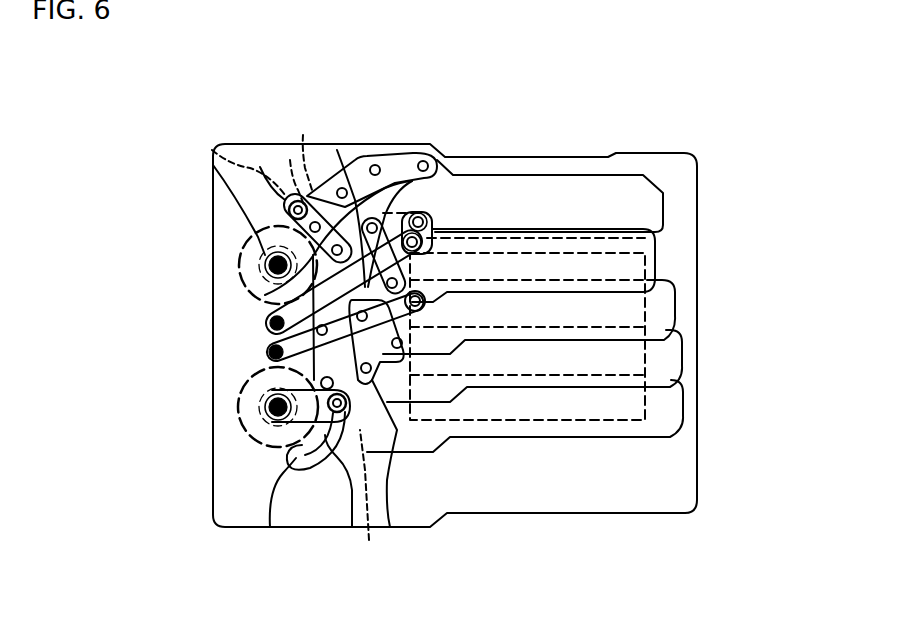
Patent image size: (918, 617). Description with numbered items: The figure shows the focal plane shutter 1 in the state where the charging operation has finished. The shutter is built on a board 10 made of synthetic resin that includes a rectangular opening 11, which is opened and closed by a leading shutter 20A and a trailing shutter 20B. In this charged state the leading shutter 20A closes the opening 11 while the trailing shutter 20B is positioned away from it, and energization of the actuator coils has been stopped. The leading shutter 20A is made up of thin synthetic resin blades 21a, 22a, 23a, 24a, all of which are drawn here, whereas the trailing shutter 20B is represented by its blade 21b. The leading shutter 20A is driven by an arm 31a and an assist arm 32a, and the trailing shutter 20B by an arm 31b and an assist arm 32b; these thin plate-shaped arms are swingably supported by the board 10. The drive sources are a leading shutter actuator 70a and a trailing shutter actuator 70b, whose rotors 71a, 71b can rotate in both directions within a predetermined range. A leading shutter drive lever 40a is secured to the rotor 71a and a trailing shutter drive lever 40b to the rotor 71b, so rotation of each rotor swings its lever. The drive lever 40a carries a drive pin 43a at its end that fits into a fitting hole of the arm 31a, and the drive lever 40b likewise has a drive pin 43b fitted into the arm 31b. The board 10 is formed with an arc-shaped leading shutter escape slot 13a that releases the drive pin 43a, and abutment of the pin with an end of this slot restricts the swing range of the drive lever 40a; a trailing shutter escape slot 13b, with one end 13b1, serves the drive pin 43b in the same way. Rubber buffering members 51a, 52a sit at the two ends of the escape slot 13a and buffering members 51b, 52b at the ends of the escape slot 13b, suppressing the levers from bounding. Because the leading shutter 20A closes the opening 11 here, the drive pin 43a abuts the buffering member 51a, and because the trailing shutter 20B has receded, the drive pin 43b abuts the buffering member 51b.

The focal plane shutter 1 is at (748, 118).
The board 10 is at (704, 174).
The opening 11 is at (608, 412).
The leading shutter 20A is at (614, 405).
The trailing shutter 20B is at (524, 159).
The blade 21a is at (650, 256).
The blade 22a is at (674, 305).
The blade 23a is at (681, 360).
The blade 24a is at (578, 416).
The blade 21b is at (560, 205).
The leading shutter escape slot 13a is at (352, 527).
The trailing shutter escape slot 13b is at (303, 135).
The one end of the escape slot 13b1 is at (212, 150).
The arm 31a is at (390, 527).
The arm 31b is at (398, 167).
The assist arm 32a is at (270, 350).
The assist arm 32b is at (270, 322).
The leading shutter drive lever 40a is at (267, 420).
The trailing shutter drive lever 40b is at (213, 165).
The drive pin 43a is at (285, 449).
The drive pin 43b is at (260, 167).
The buffering member 51a is at (369, 540).
The buffering member 51b is at (290, 160).
The buffering member 52a is at (270, 527).
The buffering member 52b is at (338, 150).
The leading shutter actuator 70a is at (250, 373).
The trailing shutter actuator 70b is at (240, 237).
The rotor 71a is at (265, 390).
The rotor 71b is at (245, 262).